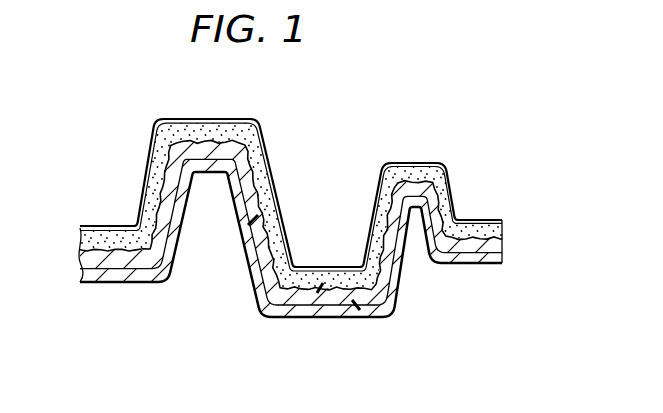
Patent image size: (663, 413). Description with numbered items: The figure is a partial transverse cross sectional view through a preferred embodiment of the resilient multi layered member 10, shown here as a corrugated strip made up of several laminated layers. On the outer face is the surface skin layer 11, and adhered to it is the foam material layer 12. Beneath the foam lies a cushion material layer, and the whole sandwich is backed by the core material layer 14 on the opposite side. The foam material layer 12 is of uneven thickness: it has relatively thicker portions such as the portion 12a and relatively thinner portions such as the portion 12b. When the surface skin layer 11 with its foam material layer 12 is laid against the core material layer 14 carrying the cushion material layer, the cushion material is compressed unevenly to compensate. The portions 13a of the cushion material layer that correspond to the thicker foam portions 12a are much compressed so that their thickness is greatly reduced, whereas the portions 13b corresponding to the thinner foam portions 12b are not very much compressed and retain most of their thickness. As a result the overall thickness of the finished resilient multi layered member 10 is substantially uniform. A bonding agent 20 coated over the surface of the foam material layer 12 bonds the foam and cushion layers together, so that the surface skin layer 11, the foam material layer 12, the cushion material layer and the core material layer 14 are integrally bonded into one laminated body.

The resilient multi layered member 10 is at (137, 292).
The surface skin layer 11 is at (423, 161).
The foam material layer 12 is at (485, 218).
The relatively thicker portion of the foam material layer 12a is at (315, 320).
The relatively thinner portion of the foam material layer 12b is at (278, 163).
The compressed portion of the cushion material layer 13a is at (360, 320).
The lightly compressed portion of the cushion material layer 13b is at (243, 238).
The core material layer 14 is at (482, 265).
The bonding agent 20 is at (217, 125).